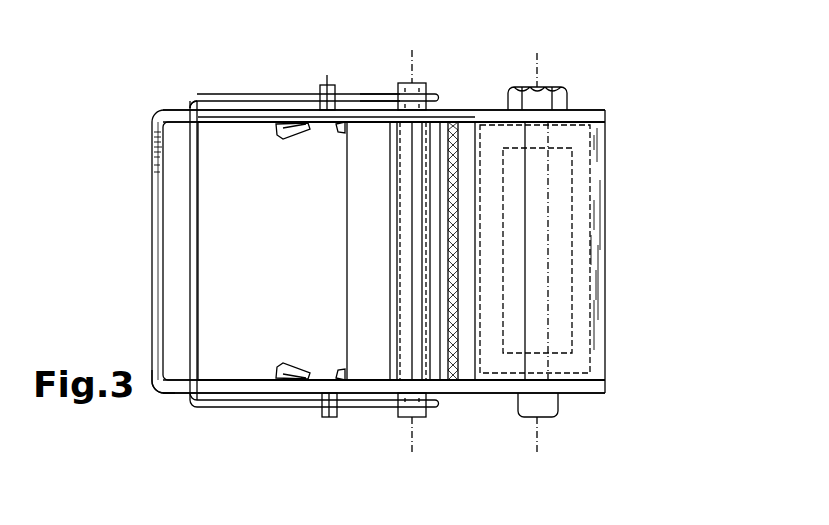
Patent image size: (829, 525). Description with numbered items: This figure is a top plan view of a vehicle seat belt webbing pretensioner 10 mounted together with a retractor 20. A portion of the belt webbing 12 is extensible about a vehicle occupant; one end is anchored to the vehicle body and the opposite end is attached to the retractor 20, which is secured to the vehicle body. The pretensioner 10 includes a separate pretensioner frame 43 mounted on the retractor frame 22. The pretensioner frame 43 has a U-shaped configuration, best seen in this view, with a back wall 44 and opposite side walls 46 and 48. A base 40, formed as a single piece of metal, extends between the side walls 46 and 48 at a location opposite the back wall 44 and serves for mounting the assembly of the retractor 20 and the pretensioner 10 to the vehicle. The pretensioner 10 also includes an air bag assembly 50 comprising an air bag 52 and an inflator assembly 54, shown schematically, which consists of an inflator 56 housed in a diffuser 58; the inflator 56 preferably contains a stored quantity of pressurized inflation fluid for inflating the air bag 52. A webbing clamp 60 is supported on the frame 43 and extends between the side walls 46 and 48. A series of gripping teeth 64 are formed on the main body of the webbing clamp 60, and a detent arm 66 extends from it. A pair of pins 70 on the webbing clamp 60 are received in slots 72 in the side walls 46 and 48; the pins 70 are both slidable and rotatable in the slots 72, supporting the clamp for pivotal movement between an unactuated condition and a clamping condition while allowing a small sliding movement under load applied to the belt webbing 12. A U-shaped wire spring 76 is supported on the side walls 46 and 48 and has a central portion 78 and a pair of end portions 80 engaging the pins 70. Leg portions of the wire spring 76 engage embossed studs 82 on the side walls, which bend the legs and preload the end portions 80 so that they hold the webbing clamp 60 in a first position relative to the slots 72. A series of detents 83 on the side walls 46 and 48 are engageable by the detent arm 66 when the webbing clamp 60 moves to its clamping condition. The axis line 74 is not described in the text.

The seat belt webbing pretensioner 10 is at (600, 90).
The belt webbing 12 is at (458, 362).
The retractor 20 is at (148, 128).
The retractor frame 22 is at (160, 387).
The base 40 is at (605, 171).
The pretensioner frame 43 is at (150, 250).
The back wall 44 is at (152, 211).
The side wall 46 is at (255, 110).
The side wall 48 is at (232, 396).
The air bag assembly 50 is at (620, 252).
The air bag 52 is at (490, 125).
The inflator assembly 54 is at (600, 290).
The inflator 56 is at (570, 330).
The diffuser 58 is at (590, 363).
The webbing clamp 60 is at (346, 245).
The gripping teeth 64 is at (410, 200).
The detent arm 66 is at (358, 288).
The pins 70 is at (425, 83).
The slots 72 is at (447, 122).
The pin axis 74 is at (410, 55).
The wire spring 76 is at (282, 92).
The central portion 78 is at (190, 313).
The end portions 80 is at (390, 95).
The embossed studs 82 is at (330, 85).
The detents 83 is at (282, 128).